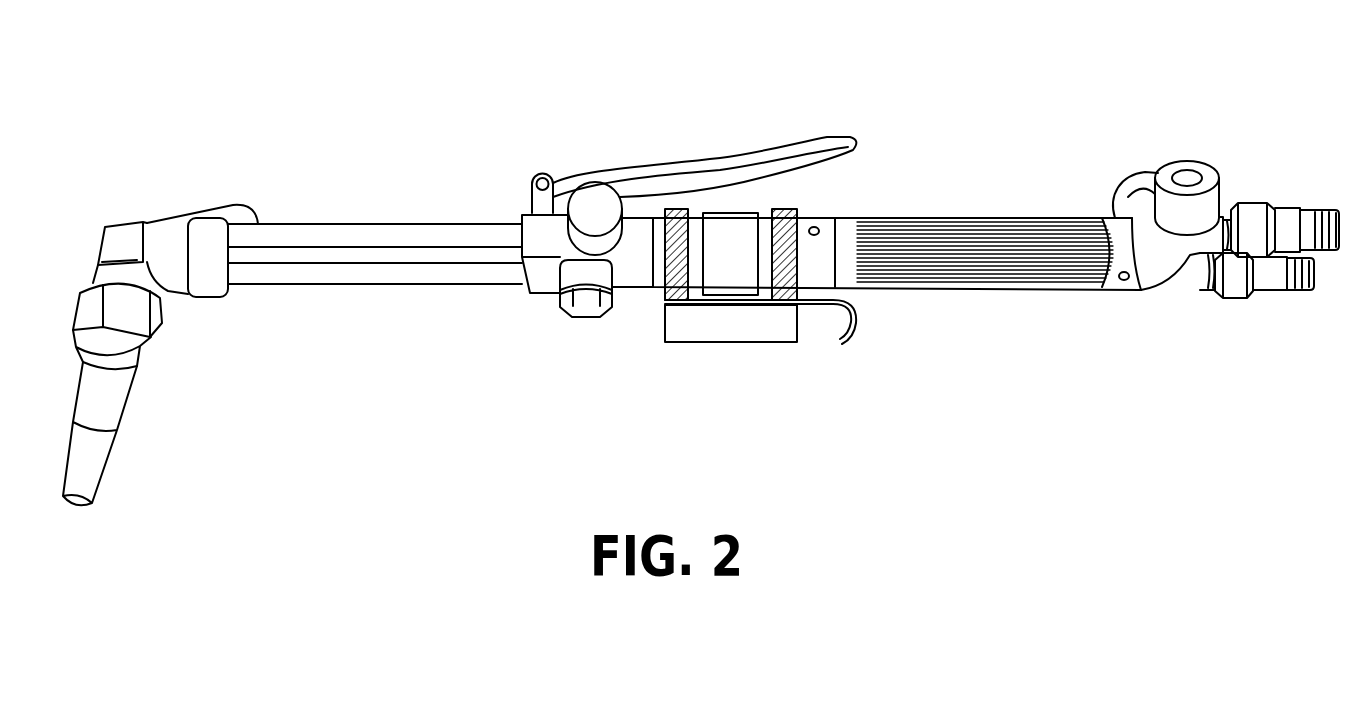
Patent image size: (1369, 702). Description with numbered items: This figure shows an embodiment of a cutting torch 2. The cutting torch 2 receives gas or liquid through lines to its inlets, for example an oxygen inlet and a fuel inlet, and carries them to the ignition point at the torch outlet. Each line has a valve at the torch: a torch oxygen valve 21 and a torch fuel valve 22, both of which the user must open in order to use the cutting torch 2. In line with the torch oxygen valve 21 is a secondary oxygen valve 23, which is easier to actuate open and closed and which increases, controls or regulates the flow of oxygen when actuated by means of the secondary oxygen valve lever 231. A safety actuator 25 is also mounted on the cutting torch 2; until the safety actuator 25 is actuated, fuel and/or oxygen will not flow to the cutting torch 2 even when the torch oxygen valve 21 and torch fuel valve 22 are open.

The cutting torch 2 is at (958, 172).
The torch oxygen valve 21 is at (1188, 178).
The torch fuel valve 22 is at (1123, 175).
The secondary oxygen valve 23 is at (538, 203).
The secondary oxygen valve lever 231 is at (713, 162).
The safety actuator 25 is at (767, 342).